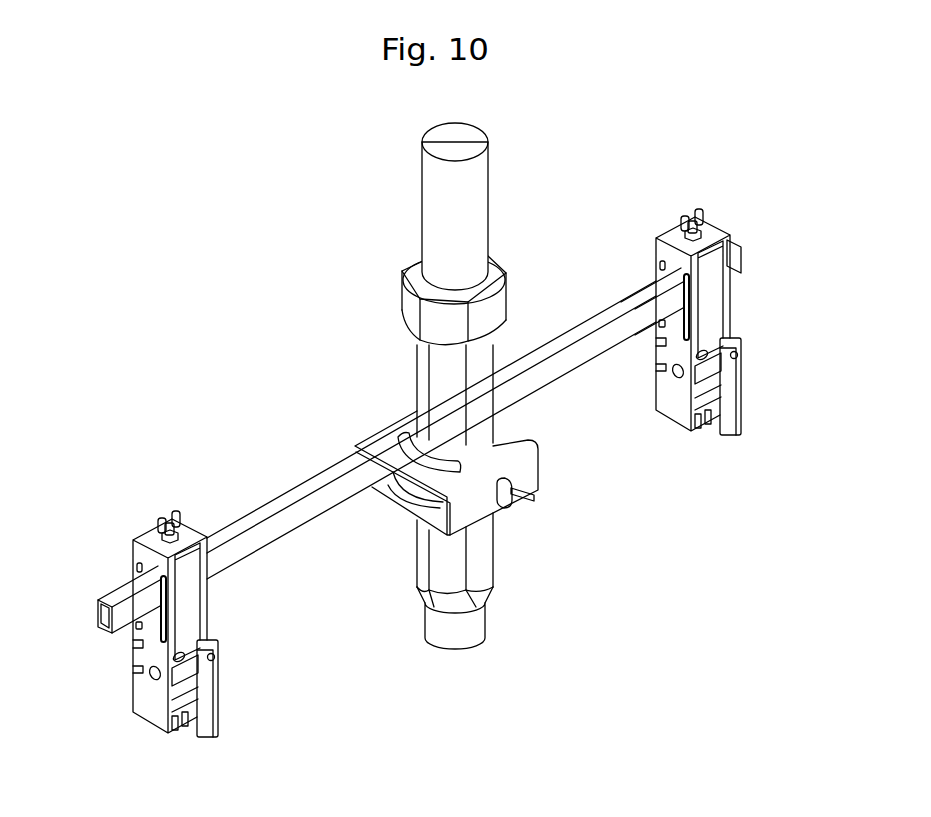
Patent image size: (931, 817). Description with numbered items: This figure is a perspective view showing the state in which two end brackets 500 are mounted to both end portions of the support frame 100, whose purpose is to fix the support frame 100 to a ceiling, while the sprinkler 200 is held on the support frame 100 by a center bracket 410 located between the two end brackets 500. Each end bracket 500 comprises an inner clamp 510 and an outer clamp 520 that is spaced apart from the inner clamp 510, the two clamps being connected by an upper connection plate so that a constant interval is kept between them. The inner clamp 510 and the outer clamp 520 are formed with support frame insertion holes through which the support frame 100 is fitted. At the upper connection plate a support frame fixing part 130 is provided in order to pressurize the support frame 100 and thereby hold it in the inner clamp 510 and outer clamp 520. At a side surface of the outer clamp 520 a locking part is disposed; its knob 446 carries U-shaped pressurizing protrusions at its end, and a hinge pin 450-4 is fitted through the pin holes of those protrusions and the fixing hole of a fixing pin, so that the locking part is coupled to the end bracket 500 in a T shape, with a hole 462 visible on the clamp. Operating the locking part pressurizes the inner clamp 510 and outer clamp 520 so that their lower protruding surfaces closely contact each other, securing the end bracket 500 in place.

The support frame 100 is at (268, 511).
The support frame fixing part 130 is at (167, 514).
The sprinkler 200 is at (438, 373).
The clamp bracket 410 is at (462, 508).
The knob 446 is at (219, 712).
The hinge pin 450-4 is at (214, 656).
The bolt hole 462 is at (150, 678).
The end bracket 500 is at (128, 551).
The inner clamp 510 is at (133, 641).
The outer clamp 520 is at (207, 628).